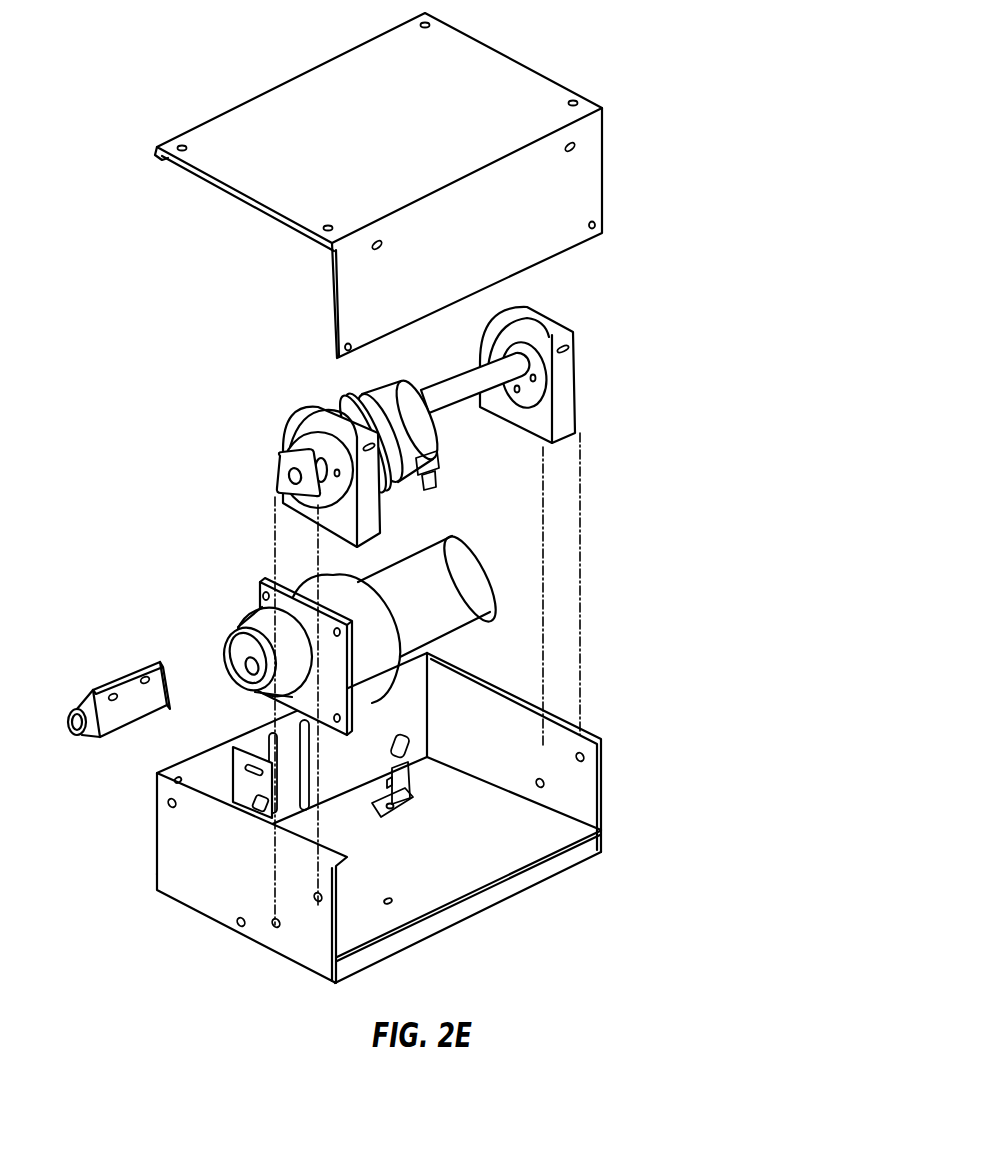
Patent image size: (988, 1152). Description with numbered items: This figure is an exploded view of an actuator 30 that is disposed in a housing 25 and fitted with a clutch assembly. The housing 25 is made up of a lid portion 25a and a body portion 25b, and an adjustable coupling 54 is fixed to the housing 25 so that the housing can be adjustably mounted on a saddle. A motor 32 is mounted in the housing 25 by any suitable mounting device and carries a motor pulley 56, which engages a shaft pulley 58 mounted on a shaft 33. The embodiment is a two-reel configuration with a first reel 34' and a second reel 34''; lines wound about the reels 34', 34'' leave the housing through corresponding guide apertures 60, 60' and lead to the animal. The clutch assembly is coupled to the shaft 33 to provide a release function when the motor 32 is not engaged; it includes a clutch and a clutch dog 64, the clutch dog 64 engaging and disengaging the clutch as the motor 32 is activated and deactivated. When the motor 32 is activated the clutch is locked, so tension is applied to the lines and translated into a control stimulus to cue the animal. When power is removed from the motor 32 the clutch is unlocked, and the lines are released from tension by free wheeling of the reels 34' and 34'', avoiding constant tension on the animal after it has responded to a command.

The housing 25 is at (398, 498).
The lid portion 25a is at (523, 62).
The body portion 25b is at (387, 818).
The actuator 30 is at (531, 485).
The motor 32 is at (503, 580).
The shaft 33 is at (465, 415).
The first reel 34' is at (586, 375).
The second reel 34'' is at (301, 464).
The adjustable coupling 54 is at (80, 703).
The motor pulley 56 is at (277, 697).
The shaft pulley 58 is at (343, 395).
The guide apertures 60 is at (529, 174).
The guide aperture 60' is at (642, 410).
The clutch dog 64 is at (417, 777).